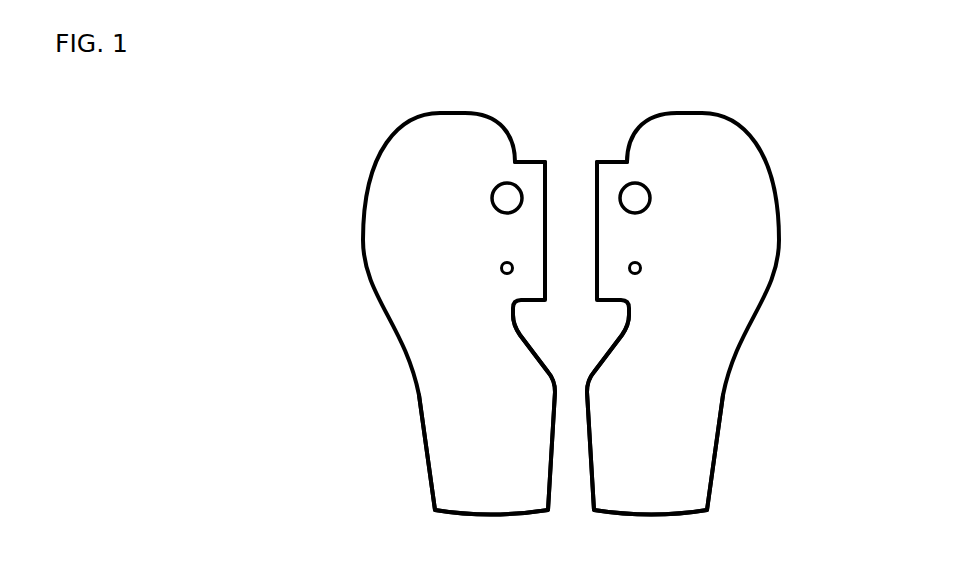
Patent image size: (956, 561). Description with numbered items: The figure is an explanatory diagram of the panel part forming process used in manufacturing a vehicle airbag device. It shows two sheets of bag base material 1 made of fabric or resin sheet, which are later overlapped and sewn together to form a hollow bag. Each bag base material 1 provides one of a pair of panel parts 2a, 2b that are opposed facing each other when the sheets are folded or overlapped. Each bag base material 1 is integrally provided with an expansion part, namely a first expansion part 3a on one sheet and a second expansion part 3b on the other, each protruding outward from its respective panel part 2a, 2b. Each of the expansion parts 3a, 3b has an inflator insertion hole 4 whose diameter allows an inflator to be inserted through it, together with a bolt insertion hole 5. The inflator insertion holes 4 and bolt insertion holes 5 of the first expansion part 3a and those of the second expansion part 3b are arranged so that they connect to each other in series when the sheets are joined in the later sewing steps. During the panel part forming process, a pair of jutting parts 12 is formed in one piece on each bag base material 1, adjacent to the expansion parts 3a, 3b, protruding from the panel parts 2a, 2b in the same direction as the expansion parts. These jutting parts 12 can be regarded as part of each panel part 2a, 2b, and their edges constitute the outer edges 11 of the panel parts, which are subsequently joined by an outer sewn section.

The bag base material 1 is at (360, 131).
The panel part 2a is at (443, 377).
The panel part 2b is at (723, 345).
The first expansion part 3a is at (532, 170).
The second expansion part 3b is at (612, 170).
The inflator insertion hole 4 is at (492, 197).
The bolt insertion hole 5 is at (501, 268).
The outer edge 11 is at (422, 468).
The jutting part 12 is at (538, 388).